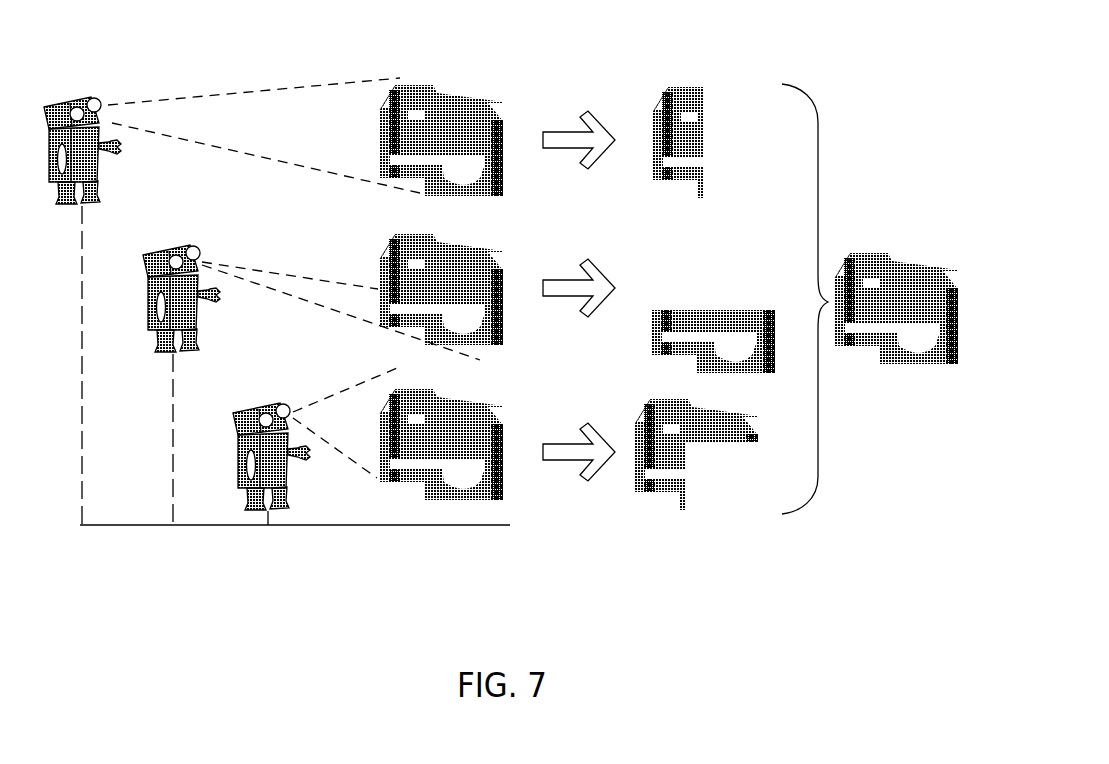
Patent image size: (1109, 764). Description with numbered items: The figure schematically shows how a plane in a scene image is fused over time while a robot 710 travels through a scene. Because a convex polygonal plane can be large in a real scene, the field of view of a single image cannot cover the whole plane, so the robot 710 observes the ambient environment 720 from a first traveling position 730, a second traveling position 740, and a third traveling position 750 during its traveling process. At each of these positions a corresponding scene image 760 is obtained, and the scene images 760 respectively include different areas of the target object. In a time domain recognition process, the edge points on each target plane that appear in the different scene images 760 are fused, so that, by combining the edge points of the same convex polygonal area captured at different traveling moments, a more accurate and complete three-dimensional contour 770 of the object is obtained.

The robot 710 is at (262, 274).
The Ambient environment 720 is at (443, 260).
The first traveling position 730 is at (82, 526).
The second traveling position 740 is at (173, 526).
The third traveling position 750 is at (268, 526).
The scene images 760 is at (705, 265).
The three-dimensional contour 770 is at (870, 299).